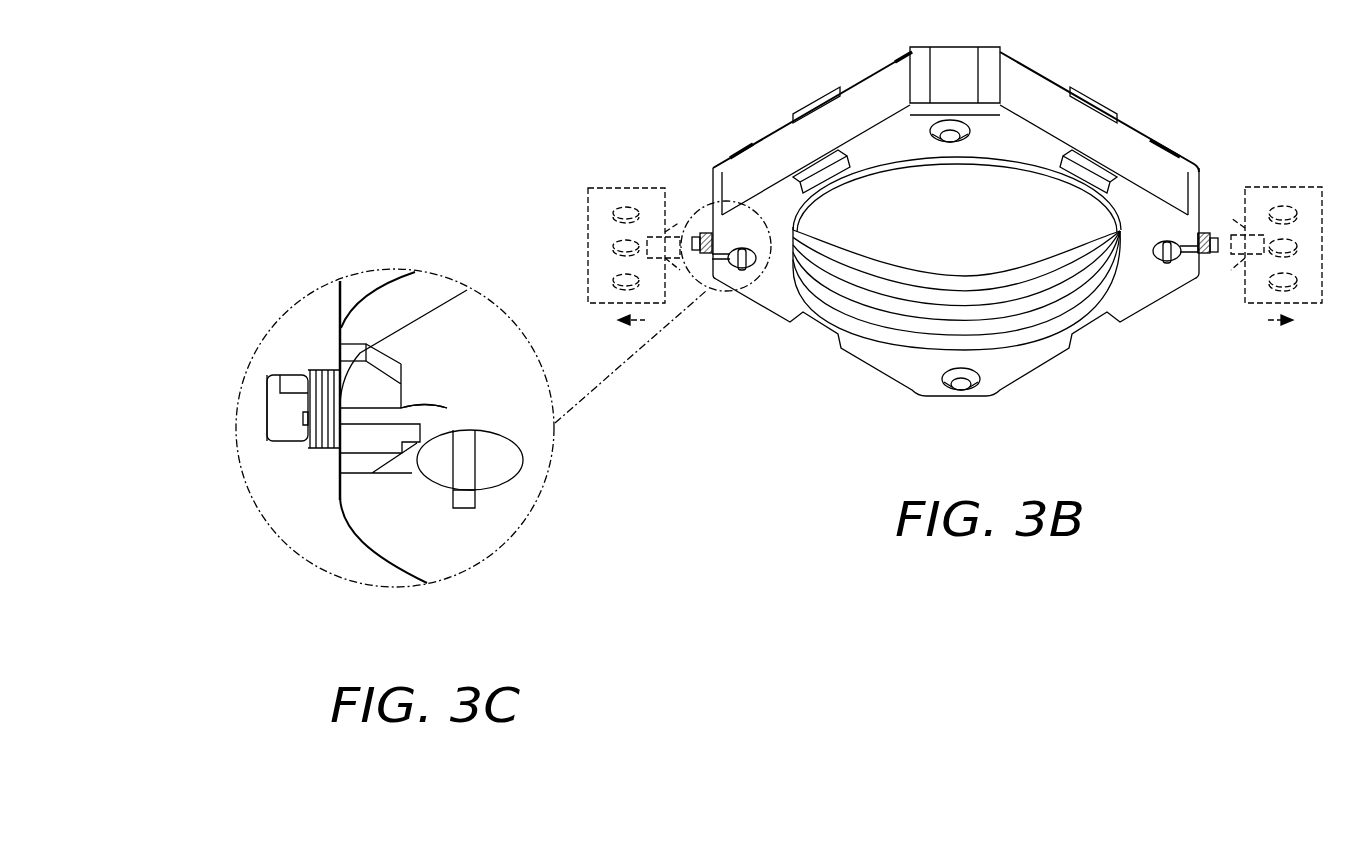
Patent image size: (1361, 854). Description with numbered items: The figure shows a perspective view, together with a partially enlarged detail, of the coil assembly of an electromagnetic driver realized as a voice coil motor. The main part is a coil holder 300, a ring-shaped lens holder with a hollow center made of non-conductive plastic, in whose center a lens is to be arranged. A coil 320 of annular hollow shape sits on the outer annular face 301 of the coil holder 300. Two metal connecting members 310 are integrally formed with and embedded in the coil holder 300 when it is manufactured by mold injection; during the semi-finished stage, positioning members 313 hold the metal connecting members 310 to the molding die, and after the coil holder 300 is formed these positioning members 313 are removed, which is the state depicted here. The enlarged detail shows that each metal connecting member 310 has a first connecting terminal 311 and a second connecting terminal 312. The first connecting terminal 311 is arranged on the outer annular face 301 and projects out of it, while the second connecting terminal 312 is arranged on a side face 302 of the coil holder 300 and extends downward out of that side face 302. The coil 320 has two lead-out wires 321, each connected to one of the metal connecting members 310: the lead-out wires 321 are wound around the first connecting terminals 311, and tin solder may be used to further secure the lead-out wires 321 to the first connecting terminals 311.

In FIG. 3B, the coil holder 300 is at (786, 306).
In FIG. 3C, the coil holder 300 is at (376, 518).
In FIG. 3C, the outer annular face 301 is at (340, 484).
In FIG. 3C, the side face 302 is at (460, 508).
In FIG. 3B, the metal connecting member 310 is at (705, 233).
In FIG. 3C, the metal connecting member 310 is at (252, 389).
In FIG. 3C, the first connecting terminal 311 is at (289, 425).
In FIG. 3C, the second connecting terminal 312 is at (436, 519).
In FIG. 3B, the positioning member 313 is at (588, 236).
In FIG. 3B, the coil 320 is at (795, 142).
In FIG. 3C, the coil 320 is at (339, 298).
In FIG. 3B, the lead-out wire 321 is at (1197, 255).
In FIG. 3C, the lead-out wire 321 is at (309, 370).